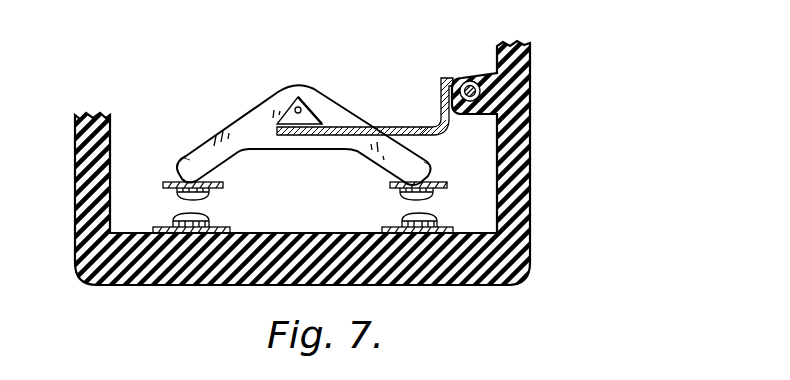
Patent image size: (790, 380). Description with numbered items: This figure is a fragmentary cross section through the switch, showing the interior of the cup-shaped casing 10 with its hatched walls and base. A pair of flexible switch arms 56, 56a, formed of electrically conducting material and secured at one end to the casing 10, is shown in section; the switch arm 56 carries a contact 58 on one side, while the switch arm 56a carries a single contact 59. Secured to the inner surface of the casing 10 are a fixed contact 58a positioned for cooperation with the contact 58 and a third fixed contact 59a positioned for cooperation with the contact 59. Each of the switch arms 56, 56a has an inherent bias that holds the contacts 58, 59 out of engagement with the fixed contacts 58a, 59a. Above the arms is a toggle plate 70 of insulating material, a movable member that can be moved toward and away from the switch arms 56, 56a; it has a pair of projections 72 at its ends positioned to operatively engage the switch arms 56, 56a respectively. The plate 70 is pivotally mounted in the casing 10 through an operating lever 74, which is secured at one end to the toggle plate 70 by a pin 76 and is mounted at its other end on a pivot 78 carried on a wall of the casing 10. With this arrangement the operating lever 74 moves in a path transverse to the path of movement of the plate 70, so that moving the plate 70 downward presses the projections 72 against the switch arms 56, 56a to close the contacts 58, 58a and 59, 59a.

The casing 10 is at (73, 146).
The switch arm 56 is at (170, 182).
The switch arm 56a is at (447, 185).
The contact 58 is at (210, 197).
The fixed contact 58a is at (211, 216).
The contact 59 is at (401, 196).
The fixed contact 59a is at (404, 216).
The toggle plate 70 is at (250, 113).
The projections 72 is at (189, 157).
The operating lever 74 is at (397, 127).
The pin 76 is at (300, 107).
The pivot 78 is at (469, 88).